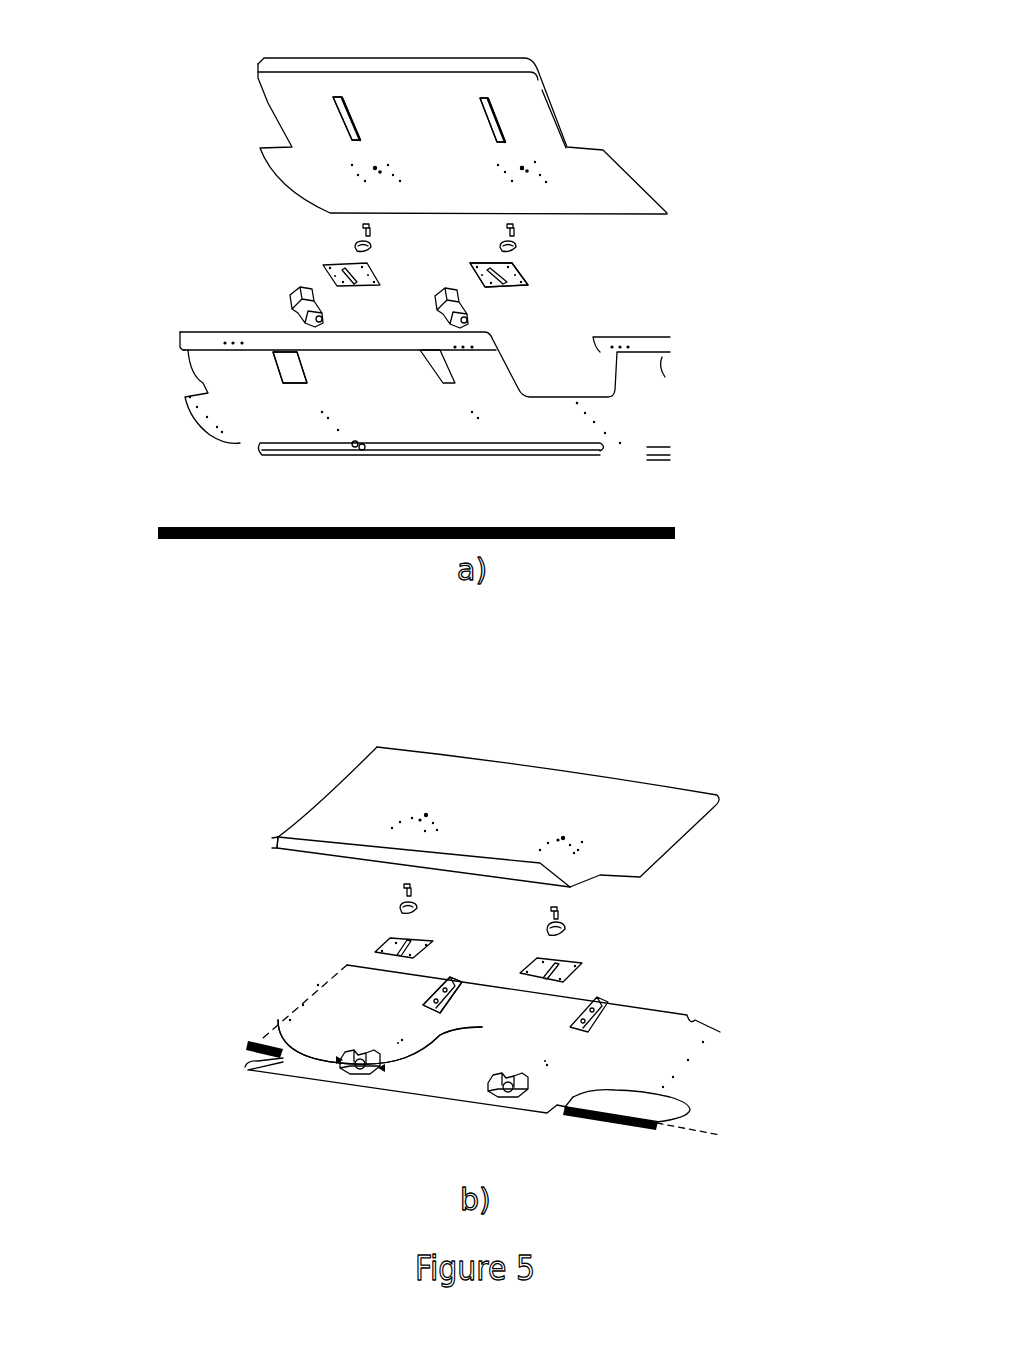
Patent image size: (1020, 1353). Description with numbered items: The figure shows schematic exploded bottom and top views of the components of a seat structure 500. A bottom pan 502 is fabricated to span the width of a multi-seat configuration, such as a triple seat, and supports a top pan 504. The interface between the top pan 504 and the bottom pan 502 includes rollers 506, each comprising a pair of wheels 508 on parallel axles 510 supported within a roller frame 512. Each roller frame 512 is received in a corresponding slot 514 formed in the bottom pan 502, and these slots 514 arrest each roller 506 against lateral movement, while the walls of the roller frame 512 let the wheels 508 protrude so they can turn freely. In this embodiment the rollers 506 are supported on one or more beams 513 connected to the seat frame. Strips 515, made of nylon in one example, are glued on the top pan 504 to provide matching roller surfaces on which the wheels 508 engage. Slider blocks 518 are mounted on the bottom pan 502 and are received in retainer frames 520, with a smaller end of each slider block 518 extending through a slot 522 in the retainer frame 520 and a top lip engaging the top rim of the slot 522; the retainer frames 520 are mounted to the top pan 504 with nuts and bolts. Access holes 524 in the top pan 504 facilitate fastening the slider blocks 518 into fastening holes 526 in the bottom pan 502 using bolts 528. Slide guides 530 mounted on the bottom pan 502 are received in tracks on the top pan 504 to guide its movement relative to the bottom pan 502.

The seat structure 500 is at (187, 133).
The bottom pan 502 is at (660, 342).
The top pan 504 is at (601, 165).
The rollers 506 is at (450, 317).
The wheels 508 is at (282, 1032).
The axles 510 is at (364, 1080).
The roller frame 512 is at (465, 1028).
The beams 513 is at (333, 523).
The slots 514 is at (285, 382).
The strips 515 is at (490, 112).
The slider blocks 518 is at (517, 247).
The retainer frames 520 is at (517, 273).
The slot 522 is at (503, 292).
The access holes 524 is at (528, 158).
The fastening holes 526 is at (488, 420).
The bolts 528 is at (527, 230).
The slide guides 530 is at (430, 1006).